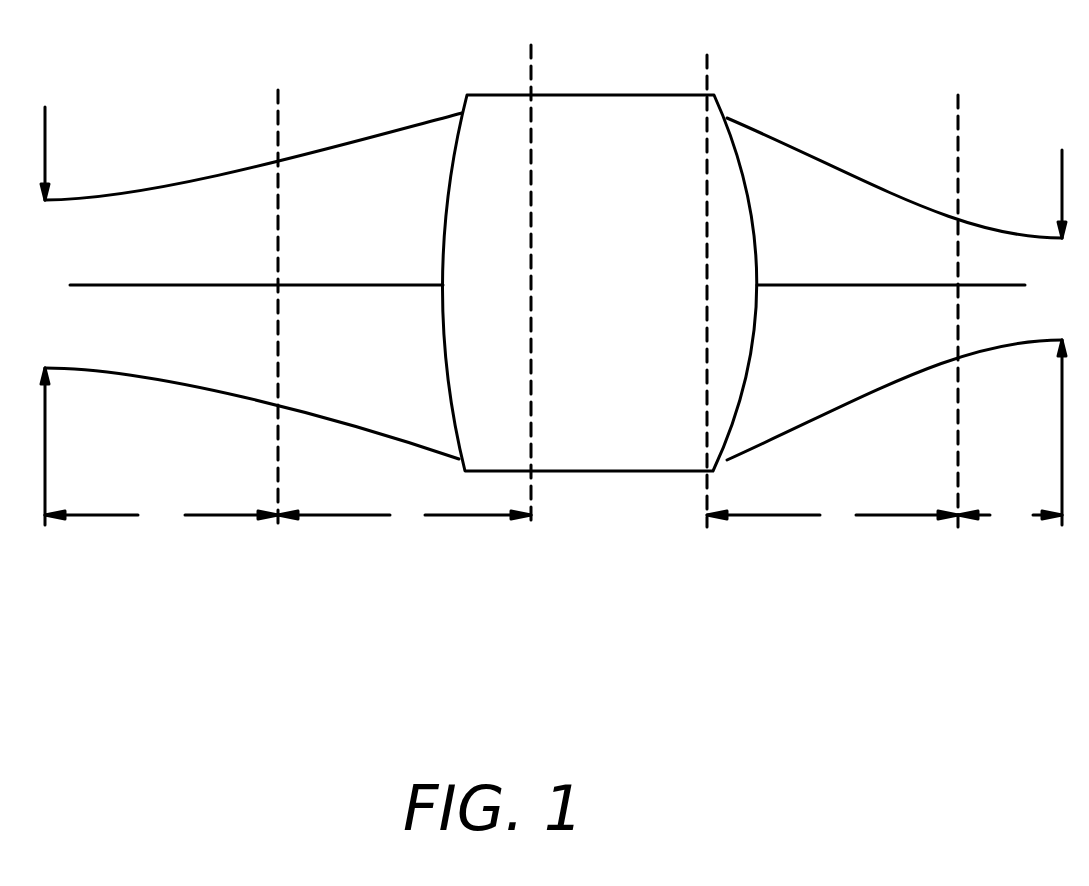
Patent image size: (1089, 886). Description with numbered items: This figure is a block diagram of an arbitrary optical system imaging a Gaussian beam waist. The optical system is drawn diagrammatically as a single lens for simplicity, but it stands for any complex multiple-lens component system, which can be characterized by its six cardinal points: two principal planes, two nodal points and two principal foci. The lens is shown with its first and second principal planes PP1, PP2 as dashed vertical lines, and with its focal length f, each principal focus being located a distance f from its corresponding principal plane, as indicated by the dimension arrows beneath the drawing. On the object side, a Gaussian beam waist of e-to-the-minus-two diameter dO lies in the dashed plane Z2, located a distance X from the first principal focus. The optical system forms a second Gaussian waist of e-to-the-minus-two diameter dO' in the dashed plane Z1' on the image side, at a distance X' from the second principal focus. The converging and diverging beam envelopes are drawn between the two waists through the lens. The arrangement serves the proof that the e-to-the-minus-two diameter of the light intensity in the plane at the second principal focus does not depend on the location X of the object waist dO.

The object Gaussian waist diameter dO is at (43, 316).
The image Gaussian waist diameter dO' is at (1053, 337).
The input beam waist plane Z2 is at (278, 90).
The output beam waist plane Z1' is at (955, 281).
The first principal plane PP1 is at (531, 48).
The second principal plane PP2 is at (707, 52).
The object waist distance X is at (161, 517).
The image waist distance X' is at (1010, 517).
The focal length f is at (618, 517).